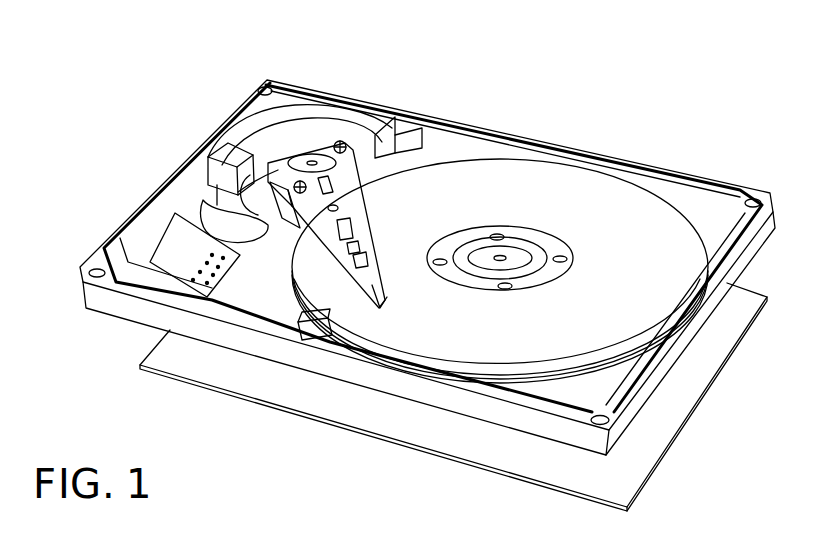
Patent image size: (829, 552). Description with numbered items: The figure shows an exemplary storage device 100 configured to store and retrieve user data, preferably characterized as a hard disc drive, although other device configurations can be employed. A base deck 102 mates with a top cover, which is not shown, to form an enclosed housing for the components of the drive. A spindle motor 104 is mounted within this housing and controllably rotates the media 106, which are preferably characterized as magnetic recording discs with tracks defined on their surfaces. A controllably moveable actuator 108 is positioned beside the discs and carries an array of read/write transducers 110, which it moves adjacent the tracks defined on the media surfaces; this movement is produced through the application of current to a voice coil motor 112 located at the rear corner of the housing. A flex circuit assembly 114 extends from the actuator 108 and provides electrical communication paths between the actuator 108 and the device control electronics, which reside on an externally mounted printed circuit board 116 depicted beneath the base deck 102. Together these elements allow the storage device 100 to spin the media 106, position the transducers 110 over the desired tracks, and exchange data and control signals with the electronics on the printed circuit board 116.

The storage device 100 is at (127, 80).
The base deck 102 is at (677, 352).
The spindle motor 104 is at (513, 253).
The media 106 is at (527, 377).
The actuator 108 is at (362, 248).
The read/write transducers 110 is at (383, 298).
The voice coil motor 112 is at (293, 125).
The flex circuit assembly 114 is at (205, 222).
The printed circuit board 116 is at (590, 500).